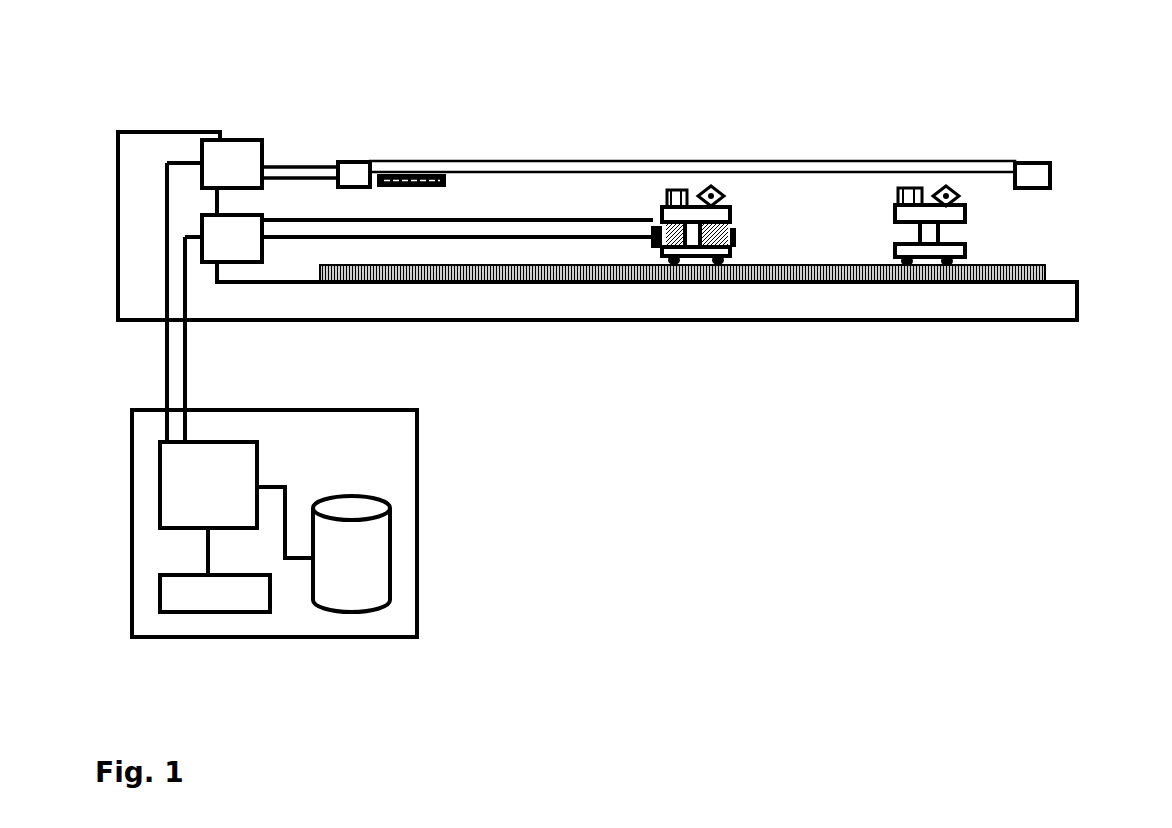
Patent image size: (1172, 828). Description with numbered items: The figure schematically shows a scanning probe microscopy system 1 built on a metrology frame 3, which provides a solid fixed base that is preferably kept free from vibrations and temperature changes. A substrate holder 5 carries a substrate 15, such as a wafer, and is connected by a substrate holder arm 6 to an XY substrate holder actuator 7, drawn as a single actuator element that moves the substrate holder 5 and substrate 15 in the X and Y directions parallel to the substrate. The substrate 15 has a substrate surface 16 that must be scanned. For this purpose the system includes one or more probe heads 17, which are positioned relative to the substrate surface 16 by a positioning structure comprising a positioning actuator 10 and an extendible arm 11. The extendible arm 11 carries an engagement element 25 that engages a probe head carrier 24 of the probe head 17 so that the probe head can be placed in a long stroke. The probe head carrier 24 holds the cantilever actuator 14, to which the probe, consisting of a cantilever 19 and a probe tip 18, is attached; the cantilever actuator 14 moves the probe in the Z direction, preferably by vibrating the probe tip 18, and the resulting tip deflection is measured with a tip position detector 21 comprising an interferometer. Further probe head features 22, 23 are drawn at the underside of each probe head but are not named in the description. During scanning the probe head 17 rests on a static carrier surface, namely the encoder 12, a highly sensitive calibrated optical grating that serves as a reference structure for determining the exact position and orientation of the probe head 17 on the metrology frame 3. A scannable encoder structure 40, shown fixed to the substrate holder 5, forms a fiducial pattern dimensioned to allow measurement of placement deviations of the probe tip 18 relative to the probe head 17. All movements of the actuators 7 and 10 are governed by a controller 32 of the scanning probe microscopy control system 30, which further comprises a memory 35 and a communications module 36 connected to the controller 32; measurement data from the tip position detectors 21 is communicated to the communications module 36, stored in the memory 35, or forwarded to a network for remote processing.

The scanning probe microscopy system 1 is at (745, 462).
The metrology frame 3 is at (118, 188).
The substrate holder 5 is at (352, 162).
The substrate holder arm 6 is at (302, 167).
The substrate holder actuator 7 is at (250, 140).
The positioning actuator 10 is at (252, 213).
The extendible arm 11 is at (418, 220).
The encoder 12 is at (840, 265).
The cantilever actuator 14 is at (660, 200).
The substrate 15 is at (853, 161).
The substrate surface 16 is at (985, 185).
The probe head 17 is at (662, 212).
The probe tip 18 is at (700, 185).
The cantilever 19 is at (690, 185).
The tip position detector 21 is at (735, 205).
The roller 22 is at (667, 260).
The roller 23 is at (726, 262).
The probe head carrier 24 is at (735, 215).
The engagement element 25 is at (735, 240).
The scanning probe microscopy control system 30 is at (417, 450).
The controller 32 is at (257, 455).
The memory 35 is at (355, 496).
The communications module 36 is at (240, 612).
The scannable encoder structure 40 is at (412, 168).